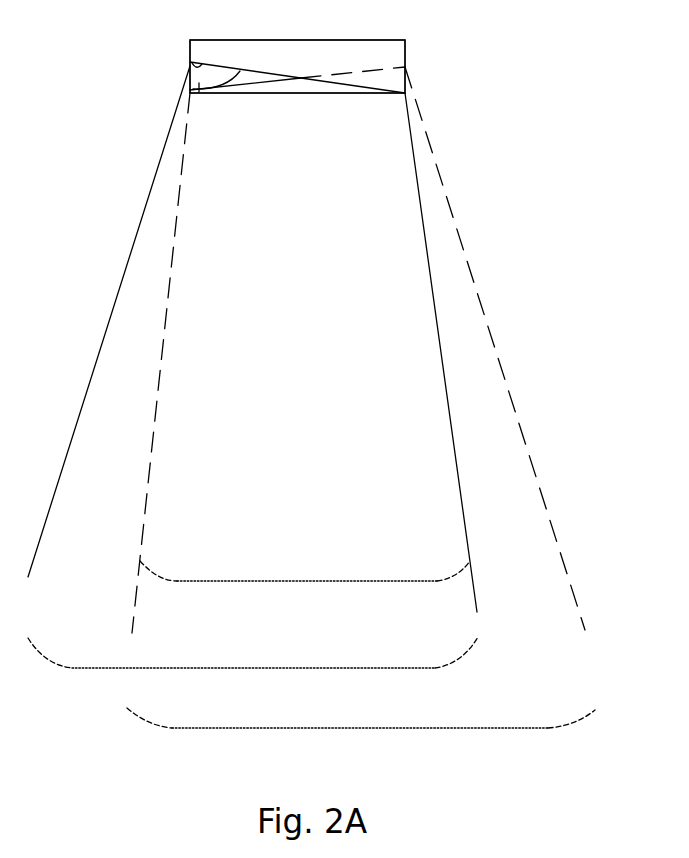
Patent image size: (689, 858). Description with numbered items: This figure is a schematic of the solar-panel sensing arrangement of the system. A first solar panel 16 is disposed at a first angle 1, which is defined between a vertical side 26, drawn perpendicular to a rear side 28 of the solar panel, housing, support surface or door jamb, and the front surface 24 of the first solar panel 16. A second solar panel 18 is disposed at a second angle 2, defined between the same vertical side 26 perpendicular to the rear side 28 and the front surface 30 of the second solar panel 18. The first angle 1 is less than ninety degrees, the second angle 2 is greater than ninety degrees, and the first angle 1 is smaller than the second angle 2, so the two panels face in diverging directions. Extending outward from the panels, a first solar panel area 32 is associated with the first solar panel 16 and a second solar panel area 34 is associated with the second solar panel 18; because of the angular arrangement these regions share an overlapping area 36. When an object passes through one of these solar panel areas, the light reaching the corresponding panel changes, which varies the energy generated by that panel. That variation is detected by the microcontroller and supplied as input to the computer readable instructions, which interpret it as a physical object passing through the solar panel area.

The first angle 1 is at (190, 63).
The second angle 2 is at (254, 45).
The first solar panel 16 is at (282, 39).
The second solar panel 18 is at (197, 78).
The front surface of the first solar panel 24 is at (255, 77).
The vertical side 26 is at (190, 63).
The rear side 28 is at (223, 39).
The front surface of the second solar panel 30 is at (336, 75).
The first solar panel area 32 is at (253, 669).
The second solar panel area 34 is at (361, 729).
The overlapping area 36 is at (307, 582).